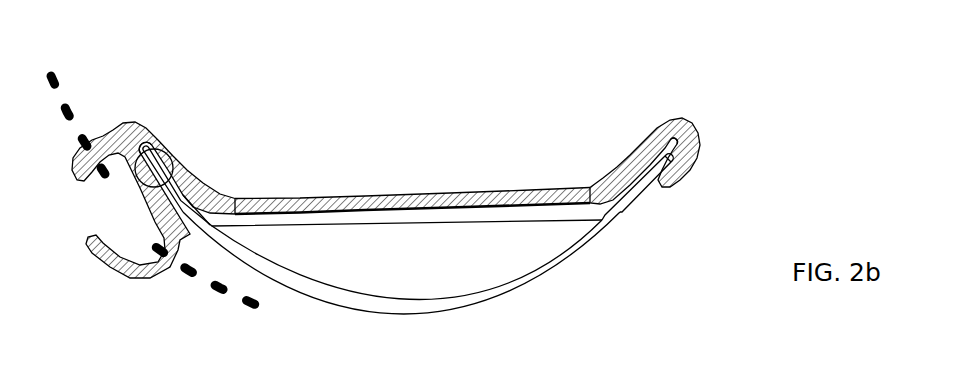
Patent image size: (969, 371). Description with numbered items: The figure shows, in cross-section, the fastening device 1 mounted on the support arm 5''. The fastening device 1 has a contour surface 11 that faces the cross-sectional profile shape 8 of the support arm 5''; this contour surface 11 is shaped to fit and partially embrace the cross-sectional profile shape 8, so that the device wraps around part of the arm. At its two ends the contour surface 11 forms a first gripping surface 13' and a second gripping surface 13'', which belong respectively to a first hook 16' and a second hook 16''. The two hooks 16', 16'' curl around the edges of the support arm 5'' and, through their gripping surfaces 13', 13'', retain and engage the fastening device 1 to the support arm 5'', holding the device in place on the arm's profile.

The fastening device 1 is at (492, 194).
The support arm 5'' is at (446, 263).
The cross-sectional profile shape 8 is at (648, 199).
The contour surface 11 is at (307, 212).
The first gripping surface 13' is at (179, 151).
The second gripping surface 13'' is at (616, 140).
The first hook 16' is at (153, 178).
The second hook 16'' is at (685, 133).